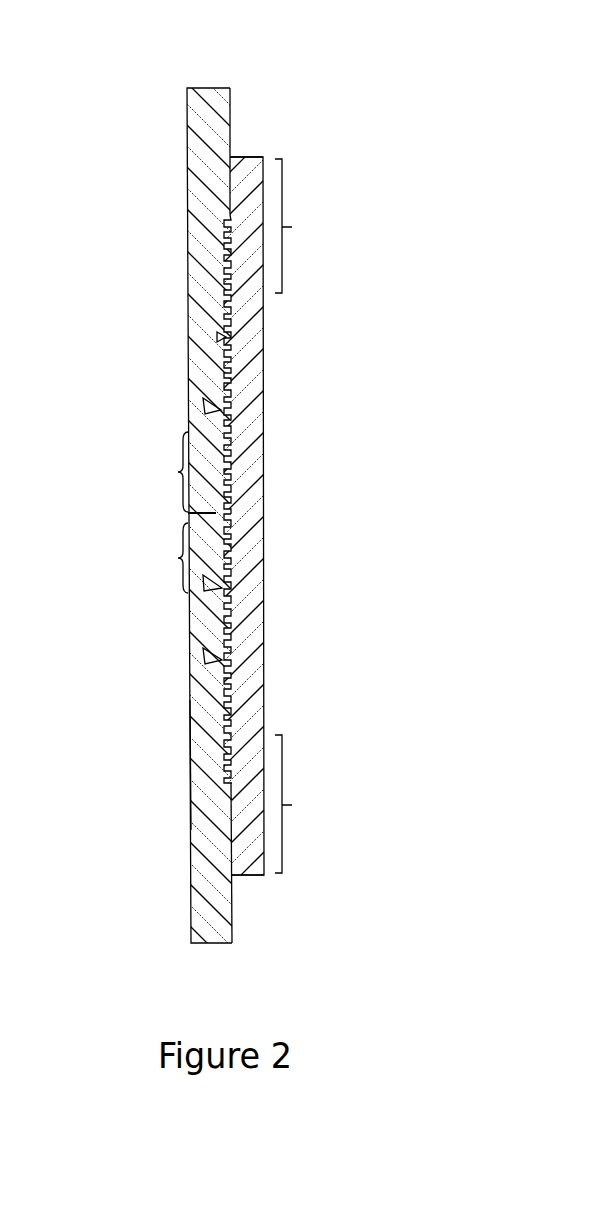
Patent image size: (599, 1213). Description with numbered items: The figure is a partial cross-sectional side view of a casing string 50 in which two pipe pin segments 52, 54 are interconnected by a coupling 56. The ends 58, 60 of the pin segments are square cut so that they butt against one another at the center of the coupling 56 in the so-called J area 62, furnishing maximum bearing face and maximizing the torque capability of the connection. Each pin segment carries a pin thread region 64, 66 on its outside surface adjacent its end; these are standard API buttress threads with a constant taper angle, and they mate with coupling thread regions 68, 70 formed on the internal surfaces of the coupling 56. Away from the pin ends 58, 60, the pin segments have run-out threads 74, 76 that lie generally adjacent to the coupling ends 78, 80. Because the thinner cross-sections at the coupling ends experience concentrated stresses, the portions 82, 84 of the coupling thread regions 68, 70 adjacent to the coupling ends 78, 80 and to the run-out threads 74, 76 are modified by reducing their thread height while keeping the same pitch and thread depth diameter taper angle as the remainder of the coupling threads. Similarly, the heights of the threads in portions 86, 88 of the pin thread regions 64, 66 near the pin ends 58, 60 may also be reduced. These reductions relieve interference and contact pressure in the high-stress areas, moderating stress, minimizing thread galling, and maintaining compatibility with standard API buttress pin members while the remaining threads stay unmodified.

The casing string 50 is at (411, 81).
The pin segment 52 is at (202, 235).
The pin segment 54 is at (192, 765).
The coupling 56 is at (235, 700).
The end of pin segment 58 is at (188, 512).
The end of pin segment 60 is at (187, 516).
The J area 62 is at (188, 513).
The pin thread region 64 is at (227, 335).
The pin thread region 66 is at (226, 650).
The coupling thread region 68 is at (215, 413).
The coupling thread region 70 is at (218, 610).
The run-out threads 74 is at (230, 172).
The run-out threads 76 is at (228, 841).
The coupling end 78 is at (262, 158).
The coupling end 80 is at (262, 877).
The portion of coupling thread region 82 is at (302, 226).
The portion of coupling thread region 84 is at (302, 804).
The portion of pin thread region 86 is at (167, 472).
The portion of pin thread region 88 is at (165, 558).